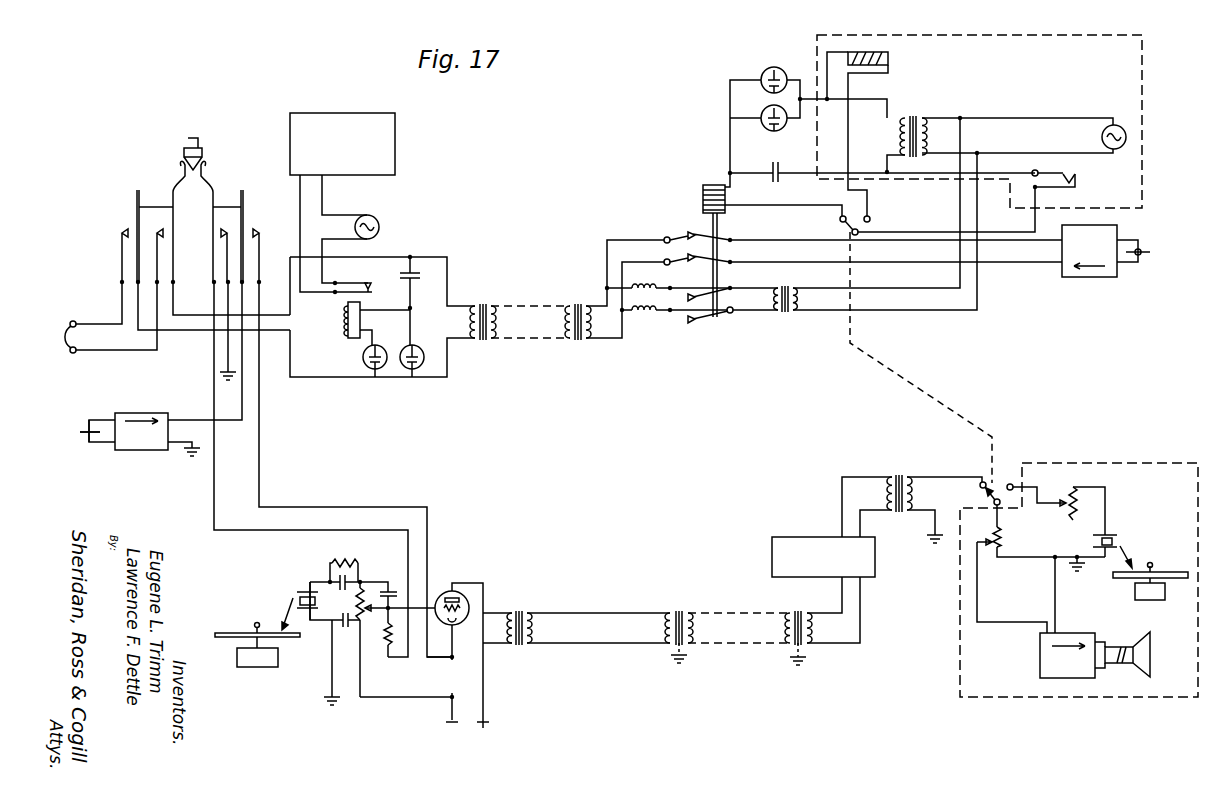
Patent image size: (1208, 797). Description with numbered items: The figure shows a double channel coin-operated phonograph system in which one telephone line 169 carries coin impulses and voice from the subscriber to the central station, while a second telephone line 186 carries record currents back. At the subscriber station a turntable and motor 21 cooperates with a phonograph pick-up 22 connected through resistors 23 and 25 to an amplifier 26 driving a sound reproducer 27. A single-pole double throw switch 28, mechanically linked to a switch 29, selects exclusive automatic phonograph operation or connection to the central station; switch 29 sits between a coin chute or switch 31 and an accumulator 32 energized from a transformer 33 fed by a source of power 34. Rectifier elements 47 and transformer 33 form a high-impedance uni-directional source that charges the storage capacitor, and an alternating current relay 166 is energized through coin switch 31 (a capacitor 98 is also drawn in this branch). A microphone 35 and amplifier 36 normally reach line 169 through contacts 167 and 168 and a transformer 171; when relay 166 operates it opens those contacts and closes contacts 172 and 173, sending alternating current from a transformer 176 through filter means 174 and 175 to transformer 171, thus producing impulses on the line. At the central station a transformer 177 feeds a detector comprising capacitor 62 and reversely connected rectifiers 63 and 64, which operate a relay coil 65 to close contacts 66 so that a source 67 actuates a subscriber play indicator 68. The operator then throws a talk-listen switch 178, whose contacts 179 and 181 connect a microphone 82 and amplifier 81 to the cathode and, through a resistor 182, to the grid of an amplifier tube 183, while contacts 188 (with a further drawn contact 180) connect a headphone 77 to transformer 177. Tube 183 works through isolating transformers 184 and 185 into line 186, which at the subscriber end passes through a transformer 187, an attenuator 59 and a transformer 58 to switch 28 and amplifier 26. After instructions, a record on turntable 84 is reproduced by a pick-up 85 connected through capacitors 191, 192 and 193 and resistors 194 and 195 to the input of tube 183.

The turntable and motor 21 is at (1135, 593).
The phonograph pick-up 22 is at (1117, 538).
The resistor 23 is at (1070, 511).
The resistor 25 is at (1001, 538).
The amplifier 26 is at (1065, 633).
The sound reproducer 27 is at (1144, 640).
The single-pole double throw switch 28 is at (988, 482).
The switch 29 is at (864, 218).
The coin chute or switch 31 is at (1077, 177).
The accumulator 32 is at (889, 60).
The transformer 33 is at (914, 117).
The source of power 34 is at (1116, 125).
The microphone 35 is at (1140, 256).
The amplifier 36 is at (1090, 278).
The rectifier elements 47 is at (762, 116).
The capacitor 98 is at (780, 172).
The transformer 58 is at (900, 476).
The attenuator 59 is at (876, 569).
The capacitor 62 is at (412, 285).
The rectifier 63 is at (424, 357).
The reversely arranged rectifier 64 is at (363, 357).
The relay coil 65 is at (346, 328).
The contacts 66 is at (367, 282).
The source of potential 67 is at (377, 221).
The subscriber play indicator 68 is at (395, 142).
The headphone 77 is at (73, 337).
The amplifier 81 is at (140, 451).
The microphone 82 is at (85, 436).
The turntable 84 is at (257, 668).
The phonograph pick-up 85 is at (297, 596).
The alternating current relay switch 166 is at (703, 201).
The switch contact 167 is at (688, 234).
The switch contact 168 is at (688, 257).
The telephone line 169 is at (522, 305).
The transformer 171 is at (580, 304).
The contact 172 is at (688, 298).
The contact 173 is at (689, 320).
The alternating current filter means 174 is at (636, 292).
The alternating current filter means 175 is at (642, 314).
The transformer 176 is at (785, 314).
The transformer 177 is at (480, 304).
The talk-listen switch 178 is at (199, 143).
The switch contact 179 is at (226, 231).
The electrode 180 is at (150, 230).
The switch contact 181 is at (258, 232).
The resistor 182 is at (388, 649).
The amplifier tube 183 is at (440, 594).
The isolating transformer 184 is at (518, 610).
The isolating transformer 185 is at (679, 610).
The telephone line 186 is at (724, 612).
The transformer 187 is at (798, 611).
The contact 188 is at (122, 230).
The capacitor 191 is at (333, 595).
The capacitor 192 is at (395, 590).
The capacitor 193 is at (348, 629).
The resistor 194 is at (364, 585).
The resistor 195 is at (347, 562).